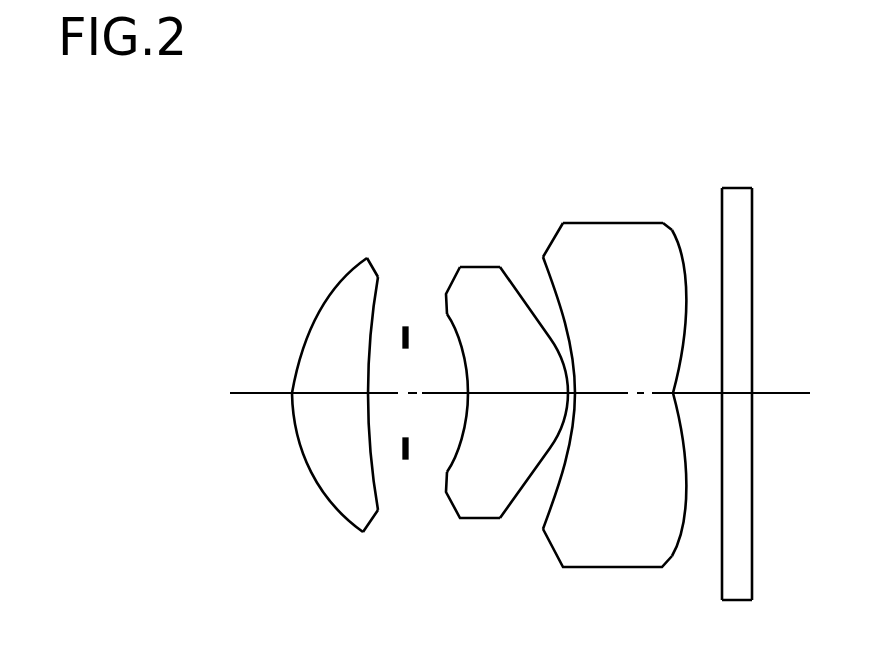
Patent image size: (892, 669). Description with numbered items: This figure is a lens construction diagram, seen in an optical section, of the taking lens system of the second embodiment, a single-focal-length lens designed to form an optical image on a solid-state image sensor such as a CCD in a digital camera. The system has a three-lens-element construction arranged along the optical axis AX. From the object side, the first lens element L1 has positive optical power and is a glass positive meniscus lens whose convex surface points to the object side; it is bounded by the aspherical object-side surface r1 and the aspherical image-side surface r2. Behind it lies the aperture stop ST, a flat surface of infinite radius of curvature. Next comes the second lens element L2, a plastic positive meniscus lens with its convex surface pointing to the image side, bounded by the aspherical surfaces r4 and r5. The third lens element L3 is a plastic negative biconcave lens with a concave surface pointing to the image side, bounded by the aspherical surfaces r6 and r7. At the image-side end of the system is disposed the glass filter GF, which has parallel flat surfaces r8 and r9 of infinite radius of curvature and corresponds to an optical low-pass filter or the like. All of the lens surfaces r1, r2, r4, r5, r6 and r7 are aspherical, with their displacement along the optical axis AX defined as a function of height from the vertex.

The first lens element L1 is at (325, 412).
The first surface (object-side surface of first lens element) r1 is at (299, 343).
The second surface (image-side surface of first lens element) r2 is at (377, 318).
The aperture stop ST is at (402, 332).
The second lens element L2 is at (507, 393).
The fourth surface (object-side surface of second lens element) r4 is at (460, 345).
The fifth surface (image-side surface of second lens element) r5 is at (523, 292).
The third lens element L3 is at (603, 385).
The sixth surface (object-side surface of third lens element) r6 is at (560, 287).
The seventh surface (image-side surface of third lens element) r7 is at (680, 236).
The glass filter GF is at (723, 384).
The eighth surface (object-side surface of glass filter) r8 is at (721, 226).
The ninth surface (image-side surface of glass filter) r9 is at (752, 224).
The optical axis AX is at (767, 393).